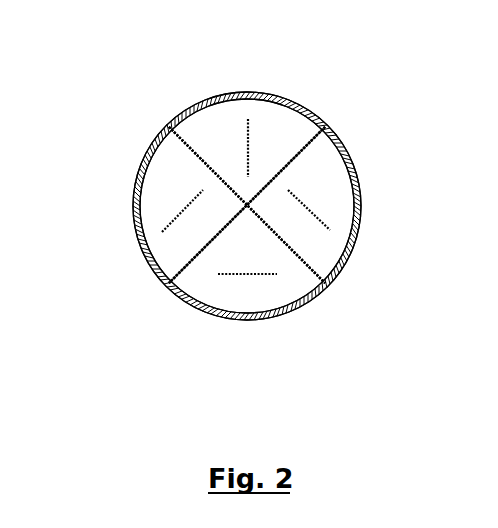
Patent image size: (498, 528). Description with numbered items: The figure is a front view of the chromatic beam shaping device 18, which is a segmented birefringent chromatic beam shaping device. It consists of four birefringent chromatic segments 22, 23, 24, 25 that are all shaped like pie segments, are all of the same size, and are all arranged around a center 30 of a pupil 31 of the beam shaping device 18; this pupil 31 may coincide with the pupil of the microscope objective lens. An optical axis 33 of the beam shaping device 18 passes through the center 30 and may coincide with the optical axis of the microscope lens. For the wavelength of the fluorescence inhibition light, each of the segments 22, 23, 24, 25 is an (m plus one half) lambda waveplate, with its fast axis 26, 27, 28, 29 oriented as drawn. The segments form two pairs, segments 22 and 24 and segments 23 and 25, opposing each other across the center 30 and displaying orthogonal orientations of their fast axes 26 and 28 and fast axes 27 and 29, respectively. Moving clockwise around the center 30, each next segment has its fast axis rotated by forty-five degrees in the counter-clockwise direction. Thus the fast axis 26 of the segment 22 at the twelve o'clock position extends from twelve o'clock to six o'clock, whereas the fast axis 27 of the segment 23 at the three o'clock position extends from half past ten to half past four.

The chromatic beam shaping device 18 is at (151, 118).
The birefringent chromatic segment 22 is at (282, 127).
The birefringent chromatic segment 23 is at (333, 183).
The birefringent chromatic segment 24 is at (230, 297).
The birefringent chromatic segment 25 is at (163, 170).
The fast axis 26 is at (247, 148).
The fast axis 27 is at (318, 220).
The fast axis 28 is at (255, 273).
The fast axis 29 is at (178, 213).
The center 30 is at (247, 205).
The pupil 31 is at (337, 120).
The optical axis 33 is at (247, 205).